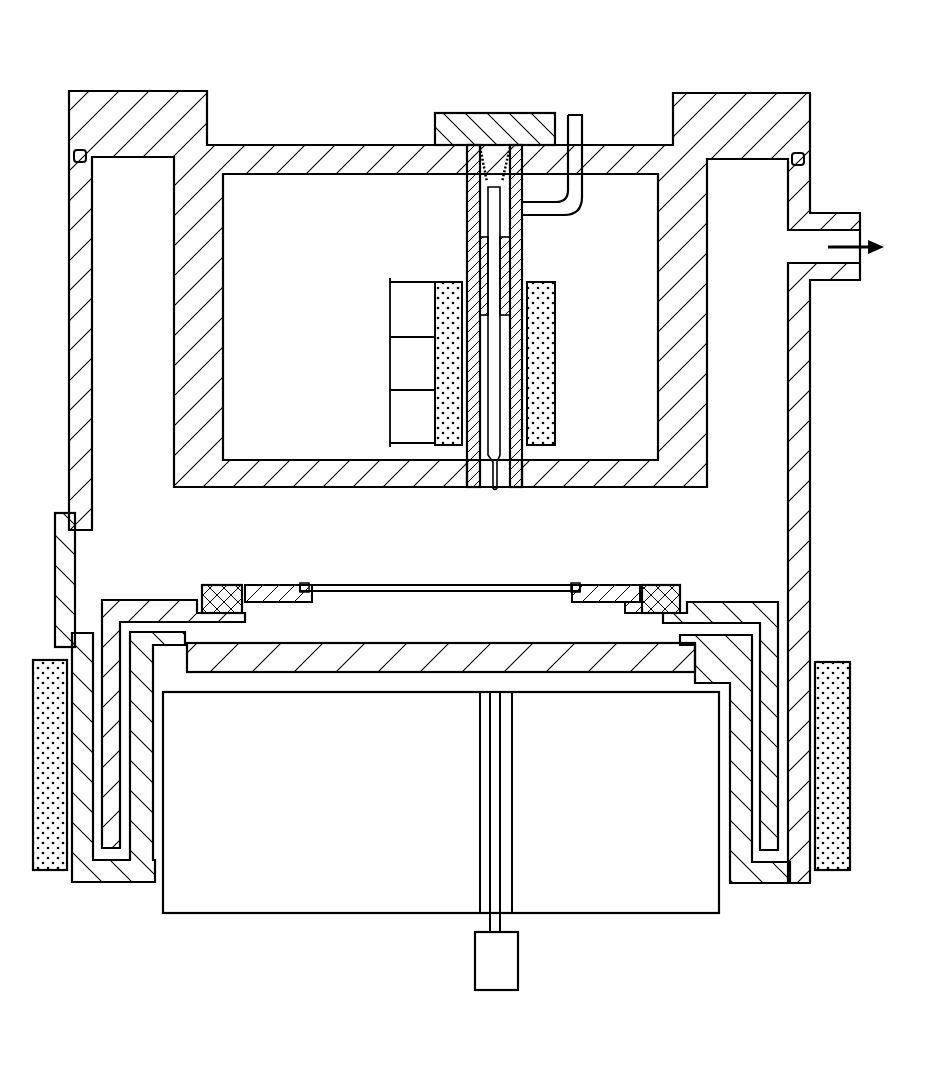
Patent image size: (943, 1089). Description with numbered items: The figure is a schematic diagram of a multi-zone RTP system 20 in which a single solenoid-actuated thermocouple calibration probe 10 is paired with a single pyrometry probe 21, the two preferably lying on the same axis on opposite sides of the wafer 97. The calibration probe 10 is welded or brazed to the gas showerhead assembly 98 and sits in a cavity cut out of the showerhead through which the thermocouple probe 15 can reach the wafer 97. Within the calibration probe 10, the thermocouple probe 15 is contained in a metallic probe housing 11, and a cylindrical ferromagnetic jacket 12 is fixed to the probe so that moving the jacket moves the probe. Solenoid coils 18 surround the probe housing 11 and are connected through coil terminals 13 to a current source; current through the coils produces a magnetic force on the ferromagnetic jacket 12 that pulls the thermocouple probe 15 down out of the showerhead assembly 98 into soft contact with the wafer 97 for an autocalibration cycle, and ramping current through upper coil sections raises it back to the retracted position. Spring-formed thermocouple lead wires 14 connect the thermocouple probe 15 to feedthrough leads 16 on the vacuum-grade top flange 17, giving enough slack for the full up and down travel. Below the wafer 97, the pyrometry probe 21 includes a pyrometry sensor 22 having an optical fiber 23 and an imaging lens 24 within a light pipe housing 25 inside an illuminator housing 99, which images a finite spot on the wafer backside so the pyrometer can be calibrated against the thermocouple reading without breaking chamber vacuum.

The calibration probe 10 is at (410, 70).
The RTP system 20 is at (150, 60).
The top flange 17 is at (430, 128).
The feedthrough leads 16 is at (470, 113).
The thermocouple lead wires 14 is at (493, 147).
The probe housing 11 is at (523, 467).
The ferromagnetic jacket 12 is at (510, 260).
The thermocouple probe 15 is at (490, 467).
The solenoid coils 18 is at (556, 320).
The coil terminals 13 is at (387, 278).
The showerhead assembly 98 is at (300, 488).
The wafer 97 is at (365, 585).
The pyrometry probe 21 is at (416, 795).
The illuminator housing 99 is at (310, 815).
The optical fiber 23 is at (500, 783).
The light pipe housing 25 is at (510, 823).
The imaging lens 24 is at (518, 916).
The pyrometry sensor 22 is at (478, 965).